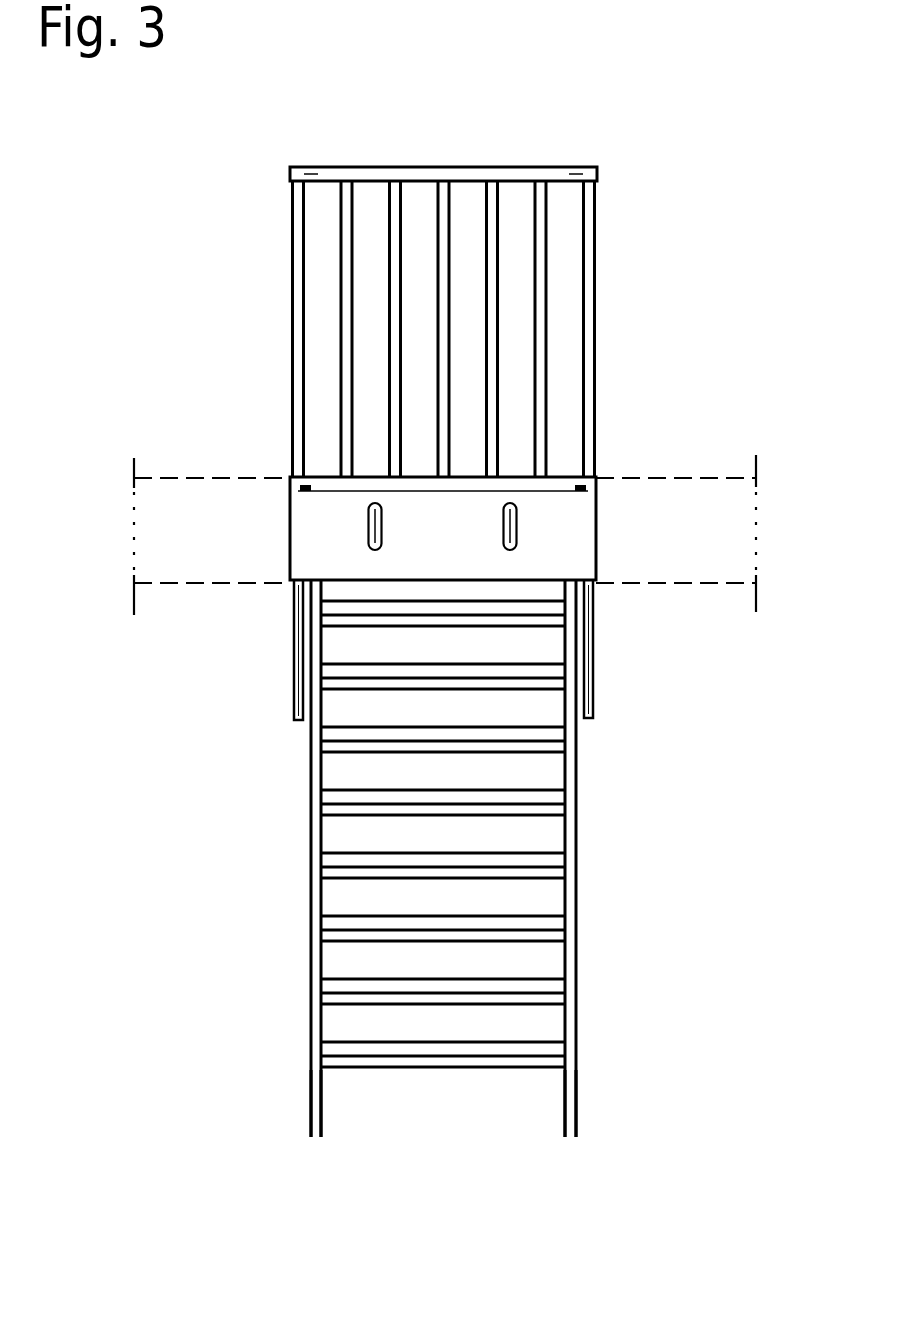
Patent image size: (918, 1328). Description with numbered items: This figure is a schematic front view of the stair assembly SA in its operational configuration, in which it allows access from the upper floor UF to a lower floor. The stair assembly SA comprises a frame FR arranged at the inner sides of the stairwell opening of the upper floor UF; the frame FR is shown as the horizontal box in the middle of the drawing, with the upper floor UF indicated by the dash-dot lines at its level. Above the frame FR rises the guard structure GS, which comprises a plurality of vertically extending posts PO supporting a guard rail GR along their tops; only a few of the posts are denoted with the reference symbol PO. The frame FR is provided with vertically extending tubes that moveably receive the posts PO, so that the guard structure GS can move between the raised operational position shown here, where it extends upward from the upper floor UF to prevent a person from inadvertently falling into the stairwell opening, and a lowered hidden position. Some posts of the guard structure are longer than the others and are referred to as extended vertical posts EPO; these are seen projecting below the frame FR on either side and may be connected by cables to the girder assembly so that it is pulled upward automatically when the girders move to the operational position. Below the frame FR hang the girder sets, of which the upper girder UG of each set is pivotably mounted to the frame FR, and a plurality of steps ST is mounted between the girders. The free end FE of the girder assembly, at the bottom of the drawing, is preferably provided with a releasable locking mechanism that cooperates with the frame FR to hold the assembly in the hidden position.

The guard rail GR is at (423, 181).
The stair assembly SA is at (612, 208).
The guard structure GS is at (282, 226).
The vertically extending posts PO is at (393, 302).
The frame FR is at (567, 517).
The upper floor UF is at (662, 563).
The extended vertical posts EPO is at (297, 681).
The upper girder UG is at (318, 1017).
The steps ST is at (411, 1048).
The free end FE is at (497, 1120).